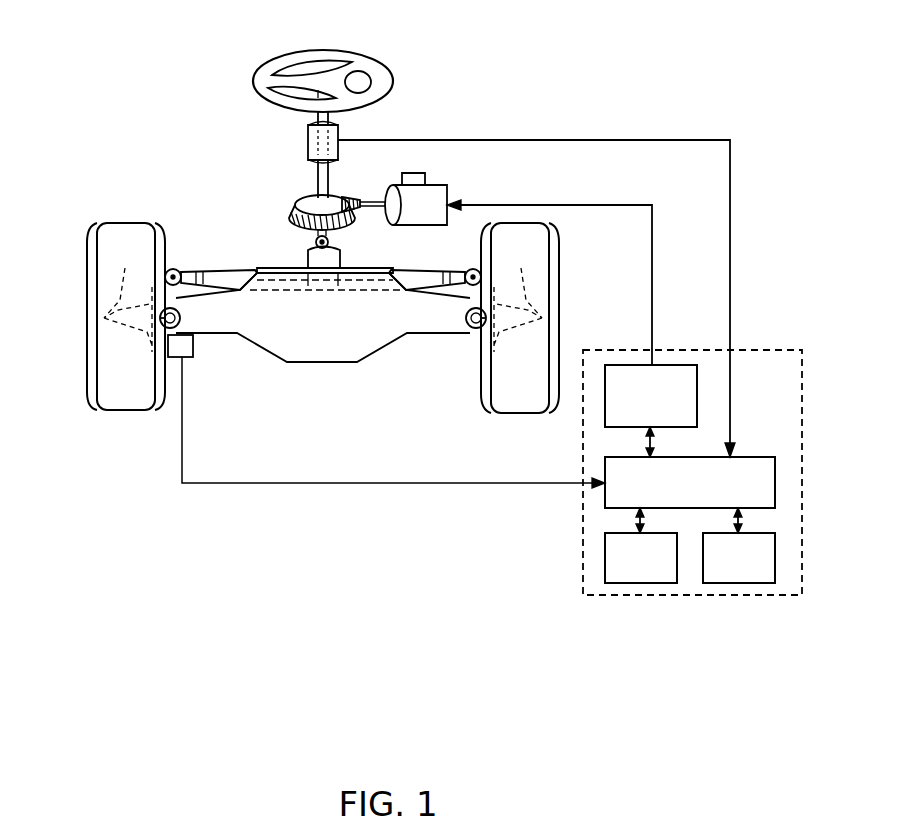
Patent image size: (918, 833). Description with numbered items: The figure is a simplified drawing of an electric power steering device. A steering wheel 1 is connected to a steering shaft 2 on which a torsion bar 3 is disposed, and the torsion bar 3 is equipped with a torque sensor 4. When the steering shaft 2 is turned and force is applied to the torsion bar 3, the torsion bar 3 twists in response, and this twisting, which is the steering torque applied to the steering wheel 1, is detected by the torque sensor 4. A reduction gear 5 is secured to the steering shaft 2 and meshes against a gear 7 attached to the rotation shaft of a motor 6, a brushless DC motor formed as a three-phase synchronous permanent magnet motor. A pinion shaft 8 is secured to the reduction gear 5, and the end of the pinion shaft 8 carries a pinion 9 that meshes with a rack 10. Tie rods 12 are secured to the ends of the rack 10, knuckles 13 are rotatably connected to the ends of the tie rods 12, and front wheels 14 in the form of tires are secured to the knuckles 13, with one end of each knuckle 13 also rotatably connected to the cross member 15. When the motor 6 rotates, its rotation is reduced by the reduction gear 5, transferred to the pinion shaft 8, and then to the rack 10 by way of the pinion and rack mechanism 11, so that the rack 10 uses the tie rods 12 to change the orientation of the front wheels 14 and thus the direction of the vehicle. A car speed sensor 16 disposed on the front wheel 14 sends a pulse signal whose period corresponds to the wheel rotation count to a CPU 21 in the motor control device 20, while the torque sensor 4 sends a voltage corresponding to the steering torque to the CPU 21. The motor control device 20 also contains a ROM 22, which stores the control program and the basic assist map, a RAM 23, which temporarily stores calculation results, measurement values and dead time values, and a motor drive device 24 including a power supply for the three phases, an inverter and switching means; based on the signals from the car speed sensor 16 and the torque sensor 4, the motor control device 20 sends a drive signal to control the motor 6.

The steering wheel 1 is at (394, 69).
The steering shaft 2 is at (340, 131).
The torsion bar 3 is at (300, 143).
The torque sensor 4 is at (307, 148).
The reduction gear 5 is at (296, 205).
The motor 6 is at (430, 182).
The gear 7 is at (352, 196).
The pinion shaft 8 is at (316, 243).
The pinion 9 is at (342, 259).
The rack 10 is at (359, 292).
The pinion and rack mechanism 11 is at (227, 272).
The tie rods 12 is at (180, 268).
The knuckles 13 is at (323, 295).
The front wheels 14 is at (87, 262).
The cross member 15 is at (262, 350).
The car speed sensor 16 is at (193, 352).
The motor control device 20 is at (788, 346).
The CPU 21 is at (757, 456).
The ROM 22 is at (762, 584).
The RAM 23 is at (664, 584).
The motor drive device 24 is at (677, 364).